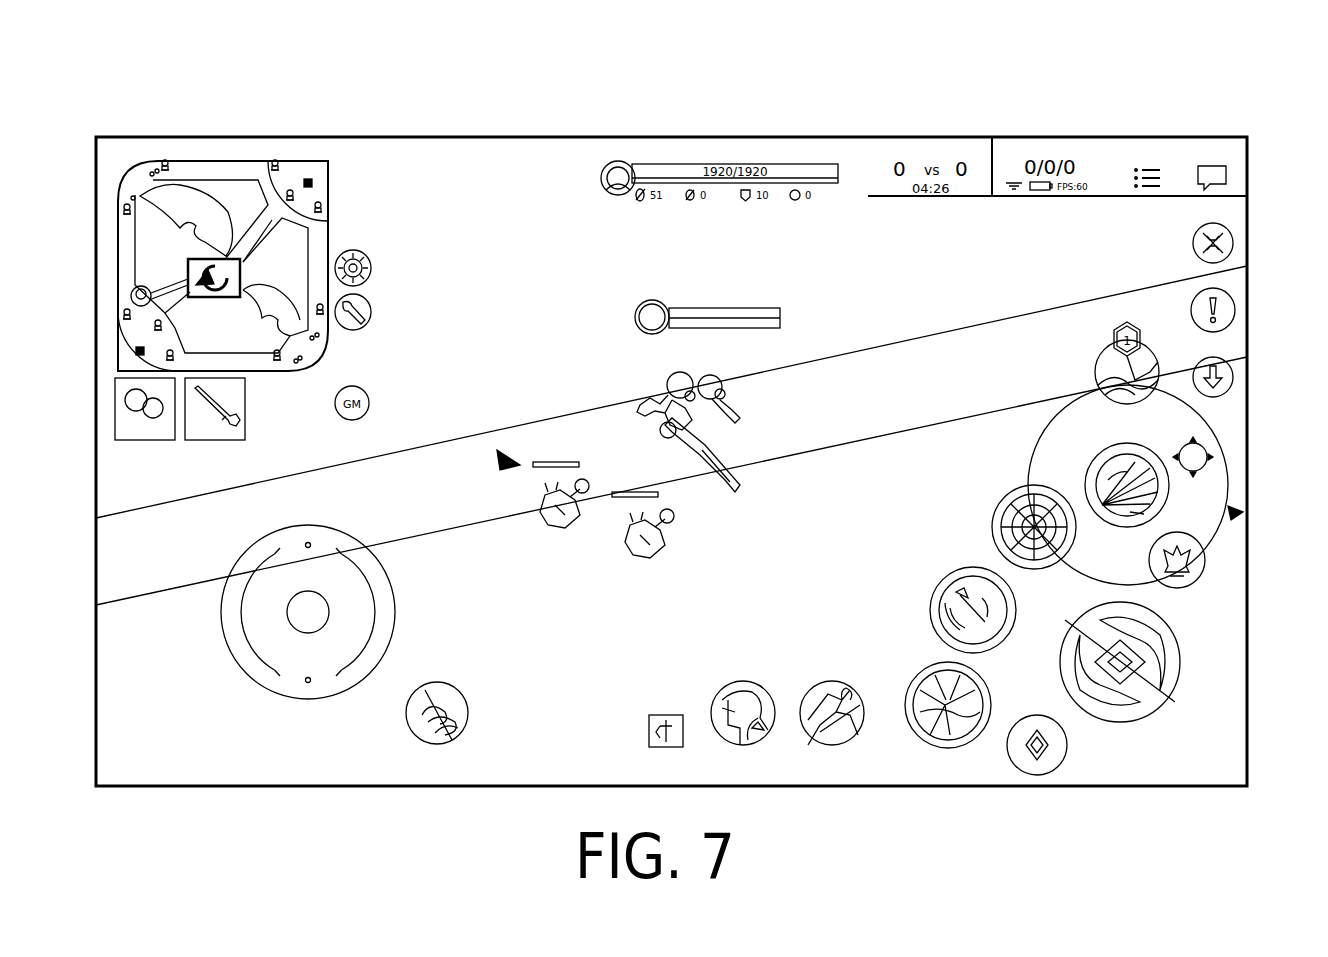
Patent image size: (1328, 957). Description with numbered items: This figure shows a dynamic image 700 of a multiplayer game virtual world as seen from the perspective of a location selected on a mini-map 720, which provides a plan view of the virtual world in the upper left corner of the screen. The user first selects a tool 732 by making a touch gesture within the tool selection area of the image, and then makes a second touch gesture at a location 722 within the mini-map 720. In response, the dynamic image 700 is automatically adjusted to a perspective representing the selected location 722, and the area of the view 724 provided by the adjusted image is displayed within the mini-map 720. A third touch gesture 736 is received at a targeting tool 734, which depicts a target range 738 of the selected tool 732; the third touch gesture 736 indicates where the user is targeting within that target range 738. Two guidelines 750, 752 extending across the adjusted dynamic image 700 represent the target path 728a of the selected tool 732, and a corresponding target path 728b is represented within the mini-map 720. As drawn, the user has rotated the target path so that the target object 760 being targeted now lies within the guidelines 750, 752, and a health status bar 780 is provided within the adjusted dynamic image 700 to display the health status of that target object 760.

The dynamic image 700 is at (1275, 118).
The mini-map 720 is at (117, 245).
The location 722 is at (195, 281).
The area of the view 724 is at (233, 256).
The target path 728a is at (498, 462).
The corresponding target path 728b is at (243, 273).
The tool 732 is at (1214, 542).
The targeting tool 734 is at (1226, 458).
The third touch gesture 736 is at (1204, 445).
The target range 738 is at (1243, 513).
The guideline 750 is at (922, 337).
The guideline 752 is at (922, 428).
The target object 760 is at (735, 396).
The health status bar 780 is at (783, 314).